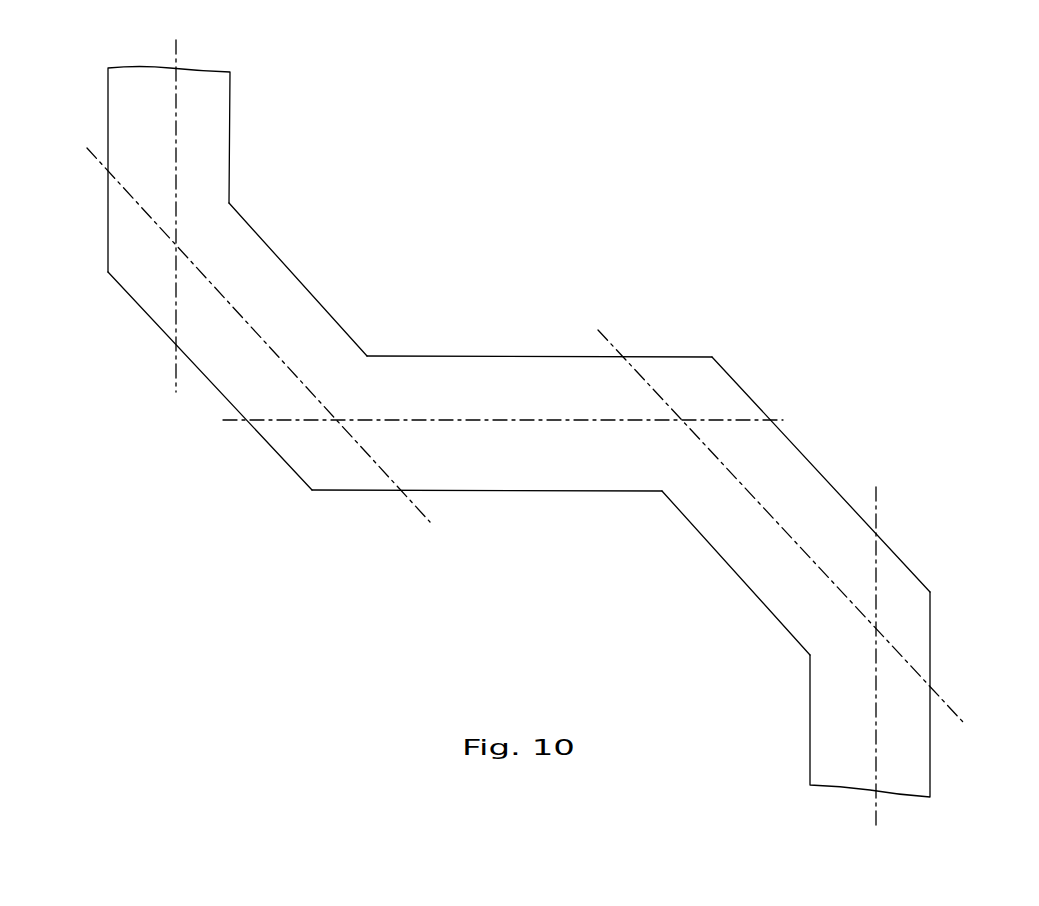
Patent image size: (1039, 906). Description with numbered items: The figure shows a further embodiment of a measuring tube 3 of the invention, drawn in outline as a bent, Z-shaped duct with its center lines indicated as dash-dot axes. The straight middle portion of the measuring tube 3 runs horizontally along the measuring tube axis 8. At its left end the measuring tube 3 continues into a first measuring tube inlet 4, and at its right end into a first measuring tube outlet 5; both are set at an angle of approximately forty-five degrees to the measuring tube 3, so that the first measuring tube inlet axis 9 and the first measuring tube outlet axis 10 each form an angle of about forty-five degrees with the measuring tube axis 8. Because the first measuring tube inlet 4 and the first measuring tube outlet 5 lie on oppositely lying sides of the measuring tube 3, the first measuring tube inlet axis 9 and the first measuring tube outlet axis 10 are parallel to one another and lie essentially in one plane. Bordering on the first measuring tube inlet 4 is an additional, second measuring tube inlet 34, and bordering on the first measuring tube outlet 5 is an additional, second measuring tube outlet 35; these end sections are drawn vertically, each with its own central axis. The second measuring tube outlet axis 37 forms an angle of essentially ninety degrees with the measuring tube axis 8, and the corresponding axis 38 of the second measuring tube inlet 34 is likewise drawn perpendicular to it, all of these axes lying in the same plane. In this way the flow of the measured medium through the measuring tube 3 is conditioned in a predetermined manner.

The measuring tube 3 is at (490, 356).
The first measuring tube inlet 4 is at (285, 462).
The first measuring tube outlet 5 is at (820, 470).
The measuring tube axis 8 is at (236, 420).
The first measuring tube inlet axis 9 is at (430, 522).
The first measuring tube outlet axis 10 is at (953, 712).
The second measuring tube inlet 34 is at (229, 130).
The second measuring tube outlet 35 is at (930, 628).
The second measuring tube outlet axis 37 is at (876, 815).
The axis of first end section 38 is at (175, 380).